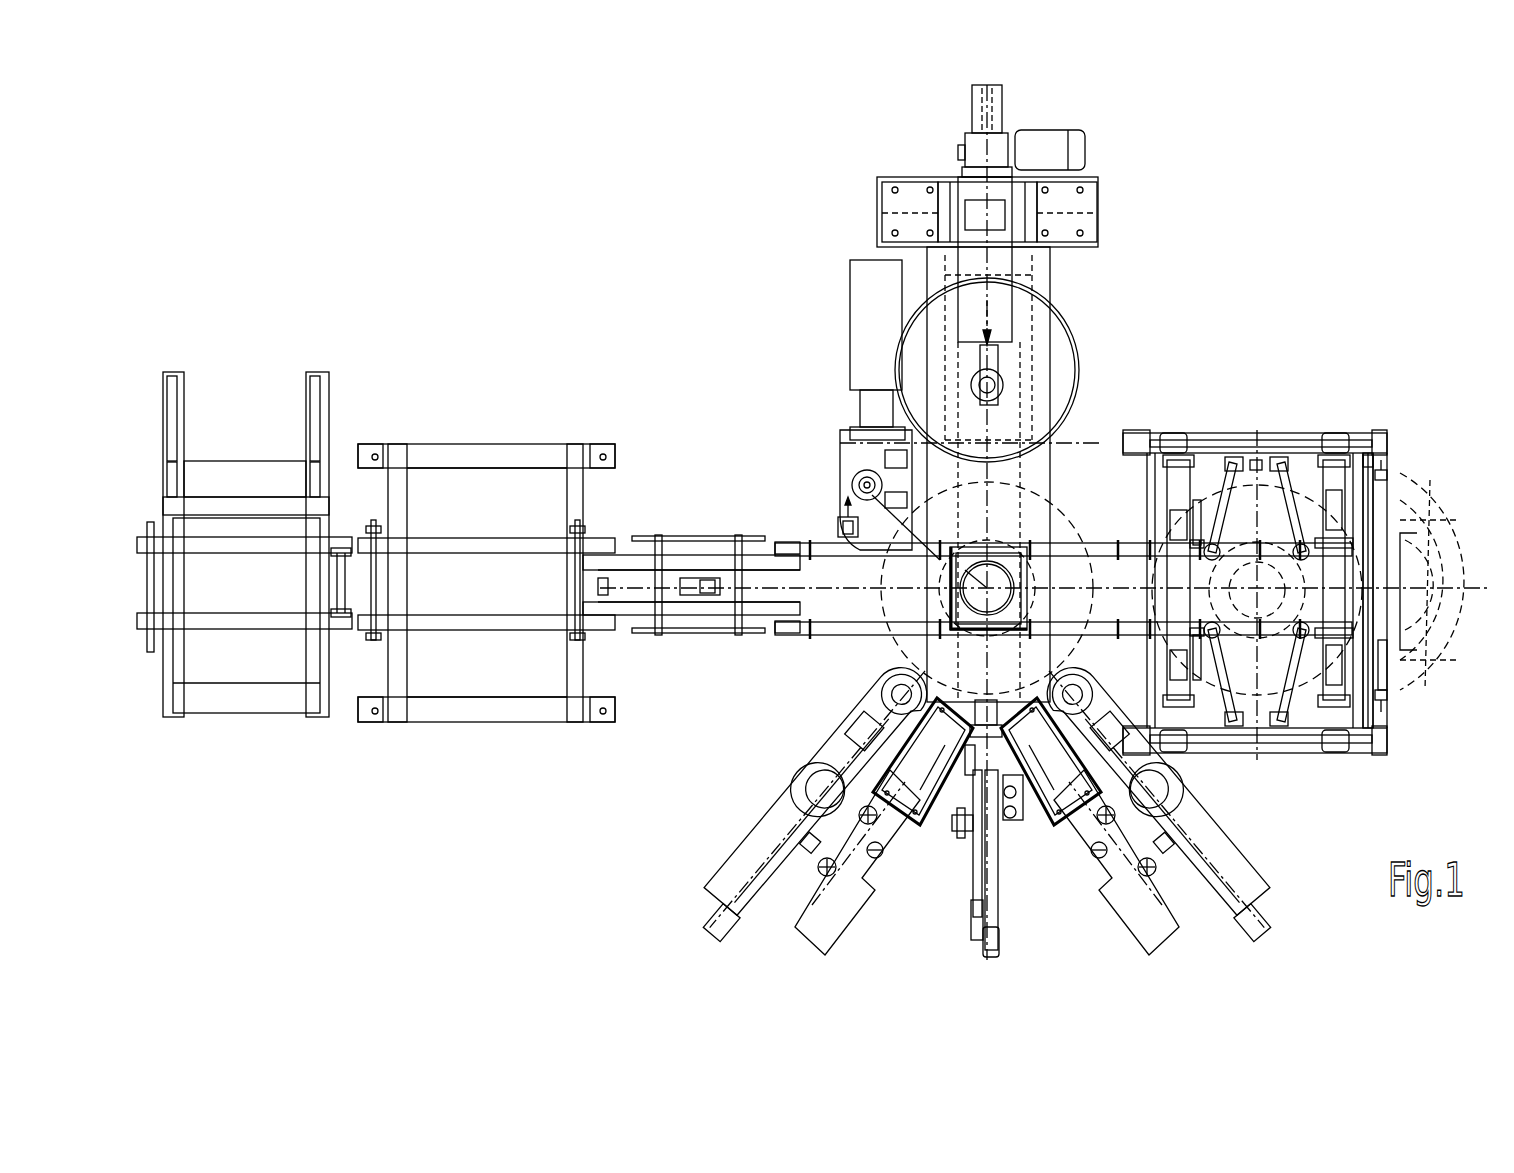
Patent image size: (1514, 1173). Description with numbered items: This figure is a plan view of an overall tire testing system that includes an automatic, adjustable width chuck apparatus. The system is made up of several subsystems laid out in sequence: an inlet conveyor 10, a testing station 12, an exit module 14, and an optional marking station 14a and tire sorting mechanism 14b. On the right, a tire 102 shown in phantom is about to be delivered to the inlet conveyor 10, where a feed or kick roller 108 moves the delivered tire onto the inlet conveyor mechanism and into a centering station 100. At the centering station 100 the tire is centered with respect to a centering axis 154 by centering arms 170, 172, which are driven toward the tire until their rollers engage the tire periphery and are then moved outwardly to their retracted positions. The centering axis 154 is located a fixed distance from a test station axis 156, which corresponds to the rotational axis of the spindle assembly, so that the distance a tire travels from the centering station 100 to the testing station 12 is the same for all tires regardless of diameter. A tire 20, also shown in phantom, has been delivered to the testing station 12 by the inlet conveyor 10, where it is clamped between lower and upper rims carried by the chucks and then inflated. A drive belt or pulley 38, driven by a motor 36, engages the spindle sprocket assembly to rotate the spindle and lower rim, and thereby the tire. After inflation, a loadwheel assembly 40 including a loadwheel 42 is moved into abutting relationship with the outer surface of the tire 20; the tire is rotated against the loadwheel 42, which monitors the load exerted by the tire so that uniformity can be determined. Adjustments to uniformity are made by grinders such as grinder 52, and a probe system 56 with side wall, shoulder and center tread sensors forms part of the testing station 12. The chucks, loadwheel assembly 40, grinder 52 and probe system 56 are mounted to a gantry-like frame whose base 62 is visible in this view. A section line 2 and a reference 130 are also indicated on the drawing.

The section line 2 is at (540, 585).
The inlet conveyor 10 is at (1290, 598).
The testing station 12 is at (806, 802).
The exit module 14 is at (494, 264).
The marking station 14a is at (602, 441).
The tire sorting mechanism 14b is at (338, 426).
The tire 20 is at (890, 657).
The motor 36 is at (862, 466).
The drive belt or pulley 38 is at (842, 526).
The loadwheel assembly 40 is at (1140, 343).
The loadwheel 42 is at (1062, 353).
The grinder 52 is at (727, 862).
The probe system 56 is at (926, 898).
The base 62 is at (1032, 522).
The centering station 100 is at (1312, 692).
The tire 102 is at (1448, 492).
The kick roller 108 is at (1378, 692).
The bracket 130 is at (1335, 540).
The centering axis 154 is at (1212, 690).
The test station axis 156 is at (992, 590).
The centering arm 170 is at (1258, 700).
The centering arm 172 is at (1290, 512).